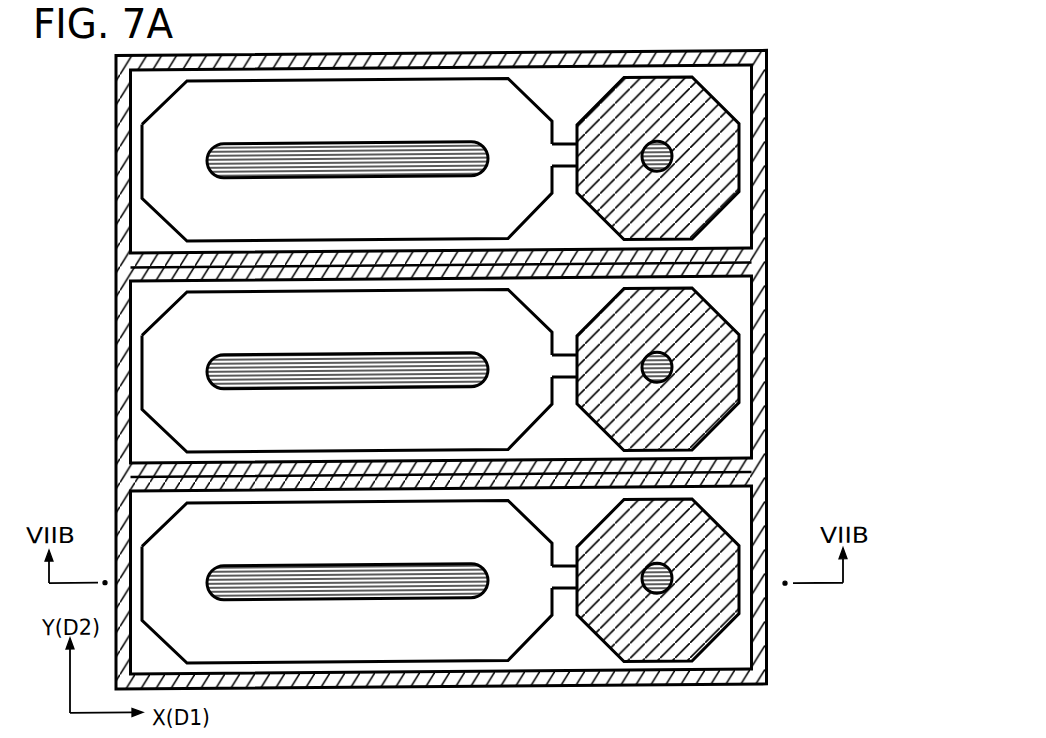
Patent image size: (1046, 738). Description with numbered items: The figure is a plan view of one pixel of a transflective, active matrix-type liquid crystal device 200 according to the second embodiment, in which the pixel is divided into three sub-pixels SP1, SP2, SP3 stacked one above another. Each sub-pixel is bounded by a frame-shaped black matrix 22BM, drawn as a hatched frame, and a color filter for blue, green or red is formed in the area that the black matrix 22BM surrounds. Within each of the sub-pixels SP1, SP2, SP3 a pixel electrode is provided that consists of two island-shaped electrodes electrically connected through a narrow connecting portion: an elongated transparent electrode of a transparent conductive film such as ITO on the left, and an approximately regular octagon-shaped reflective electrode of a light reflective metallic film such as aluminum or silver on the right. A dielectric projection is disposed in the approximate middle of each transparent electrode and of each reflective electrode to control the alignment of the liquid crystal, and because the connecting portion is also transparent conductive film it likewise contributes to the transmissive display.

The liquid crystal device 200 is at (838, 130).
The black matrix 22BM is at (760, 659).
The sub-pixel SP1 is at (110, 510).
The sub-pixel SP2 is at (108, 371).
The sub-pixel SP3 is at (110, 156).